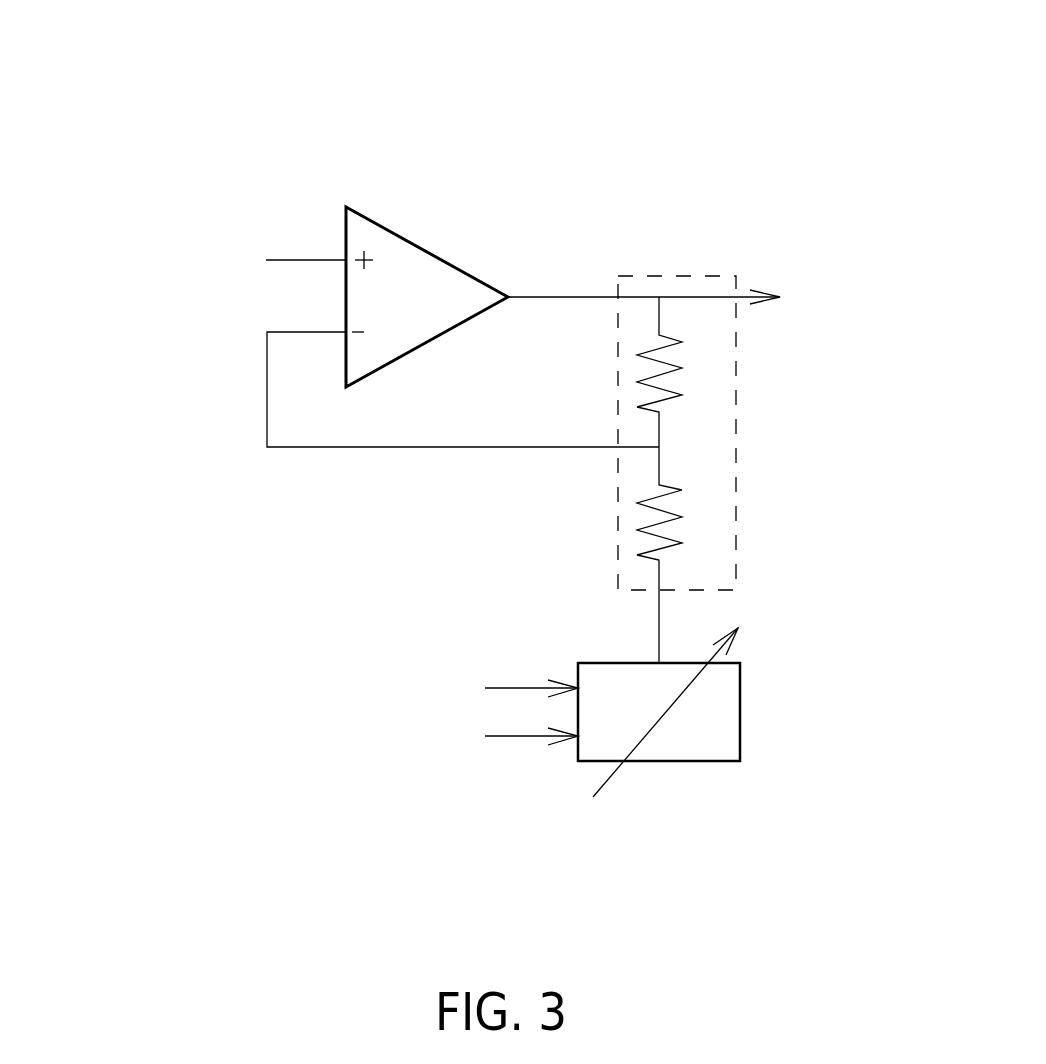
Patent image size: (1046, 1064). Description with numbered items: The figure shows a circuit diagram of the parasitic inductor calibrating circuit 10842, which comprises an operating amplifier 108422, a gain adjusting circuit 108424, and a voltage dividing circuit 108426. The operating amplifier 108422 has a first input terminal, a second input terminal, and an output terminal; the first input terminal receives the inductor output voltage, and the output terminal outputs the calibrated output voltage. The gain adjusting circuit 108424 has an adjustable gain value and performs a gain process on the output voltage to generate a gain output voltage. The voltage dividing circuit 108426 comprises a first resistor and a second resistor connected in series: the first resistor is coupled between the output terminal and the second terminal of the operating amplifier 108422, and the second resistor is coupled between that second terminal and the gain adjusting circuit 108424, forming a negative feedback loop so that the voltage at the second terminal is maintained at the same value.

The parasitic inductor calibrating circuit 10842 is at (780, 78).
The operating amplifier 108422 is at (432, 248).
The voltage dividing circuit 108426 is at (738, 438).
The gain adjusting circuit 108424 is at (741, 716).